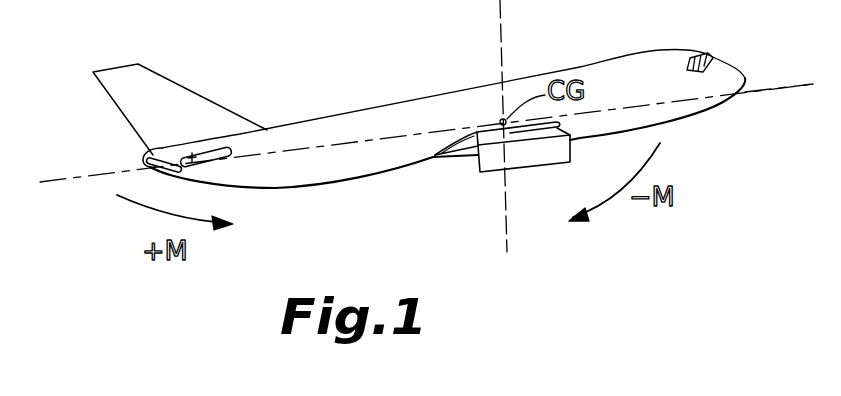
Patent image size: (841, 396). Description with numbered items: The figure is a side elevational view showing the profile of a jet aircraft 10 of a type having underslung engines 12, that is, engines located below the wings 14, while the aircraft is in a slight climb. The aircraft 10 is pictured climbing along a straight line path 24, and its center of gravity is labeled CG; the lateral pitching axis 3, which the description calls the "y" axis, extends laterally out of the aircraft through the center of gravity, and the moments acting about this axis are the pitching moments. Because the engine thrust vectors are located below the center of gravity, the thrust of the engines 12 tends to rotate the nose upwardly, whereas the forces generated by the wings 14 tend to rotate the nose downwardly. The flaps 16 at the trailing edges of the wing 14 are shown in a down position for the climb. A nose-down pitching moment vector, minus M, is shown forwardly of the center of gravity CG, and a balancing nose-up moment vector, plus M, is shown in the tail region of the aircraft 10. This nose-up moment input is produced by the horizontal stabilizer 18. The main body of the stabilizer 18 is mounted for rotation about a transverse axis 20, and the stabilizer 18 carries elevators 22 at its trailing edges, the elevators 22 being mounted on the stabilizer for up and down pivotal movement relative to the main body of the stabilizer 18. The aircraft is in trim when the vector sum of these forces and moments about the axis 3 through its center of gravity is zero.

The jet aircraft 10 is at (416, 97).
The pitch axis 3 is at (506, 118).
The underslung engines 12 is at (540, 159).
The wings 14 is at (484, 122).
The flaps 16 is at (456, 157).
The horizontal stabilizer 18 is at (226, 150).
The transverse axis 20 is at (193, 162).
The elevators 22 is at (158, 160).
The straight line path 24 is at (777, 89).